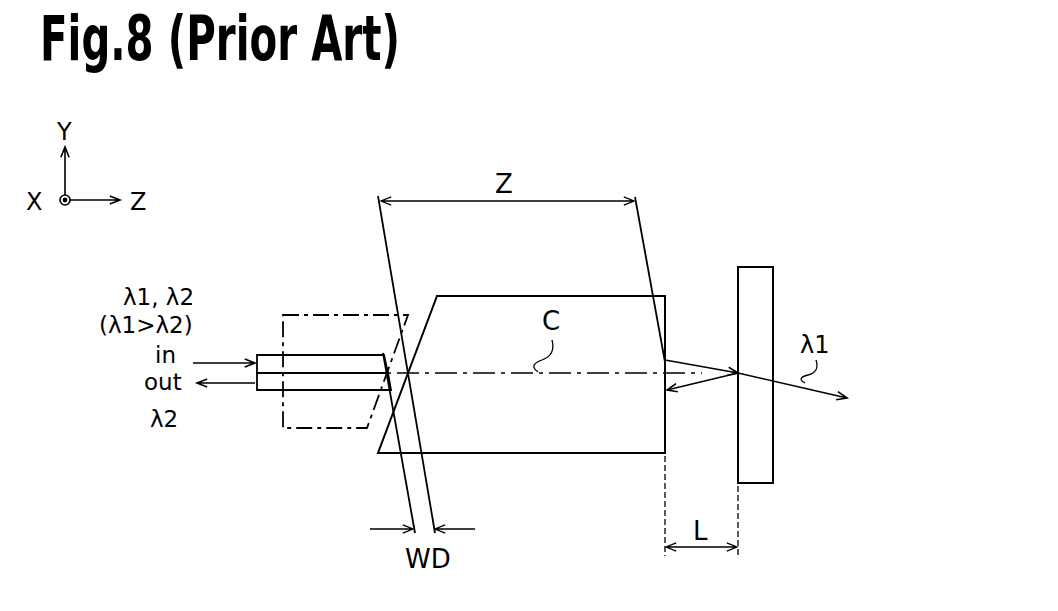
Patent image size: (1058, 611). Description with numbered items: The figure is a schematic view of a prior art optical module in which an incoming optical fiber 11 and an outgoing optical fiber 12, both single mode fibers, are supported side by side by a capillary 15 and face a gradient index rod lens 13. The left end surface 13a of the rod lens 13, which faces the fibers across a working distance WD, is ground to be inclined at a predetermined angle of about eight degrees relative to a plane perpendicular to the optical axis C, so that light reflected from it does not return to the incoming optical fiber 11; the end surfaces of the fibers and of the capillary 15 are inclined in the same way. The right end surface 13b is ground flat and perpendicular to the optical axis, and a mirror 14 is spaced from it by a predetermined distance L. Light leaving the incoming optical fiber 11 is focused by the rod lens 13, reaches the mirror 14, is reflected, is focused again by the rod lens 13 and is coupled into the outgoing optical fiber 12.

The incoming optical fiber 11 is at (270, 352).
The outgoing optical fiber 12 is at (268, 392).
The gradient index rod lens 13 is at (492, 306).
The left end surface 13a is at (383, 436).
The right end surface 13b is at (668, 310).
The mirror 14 is at (755, 267).
The capillary 15 is at (300, 314).